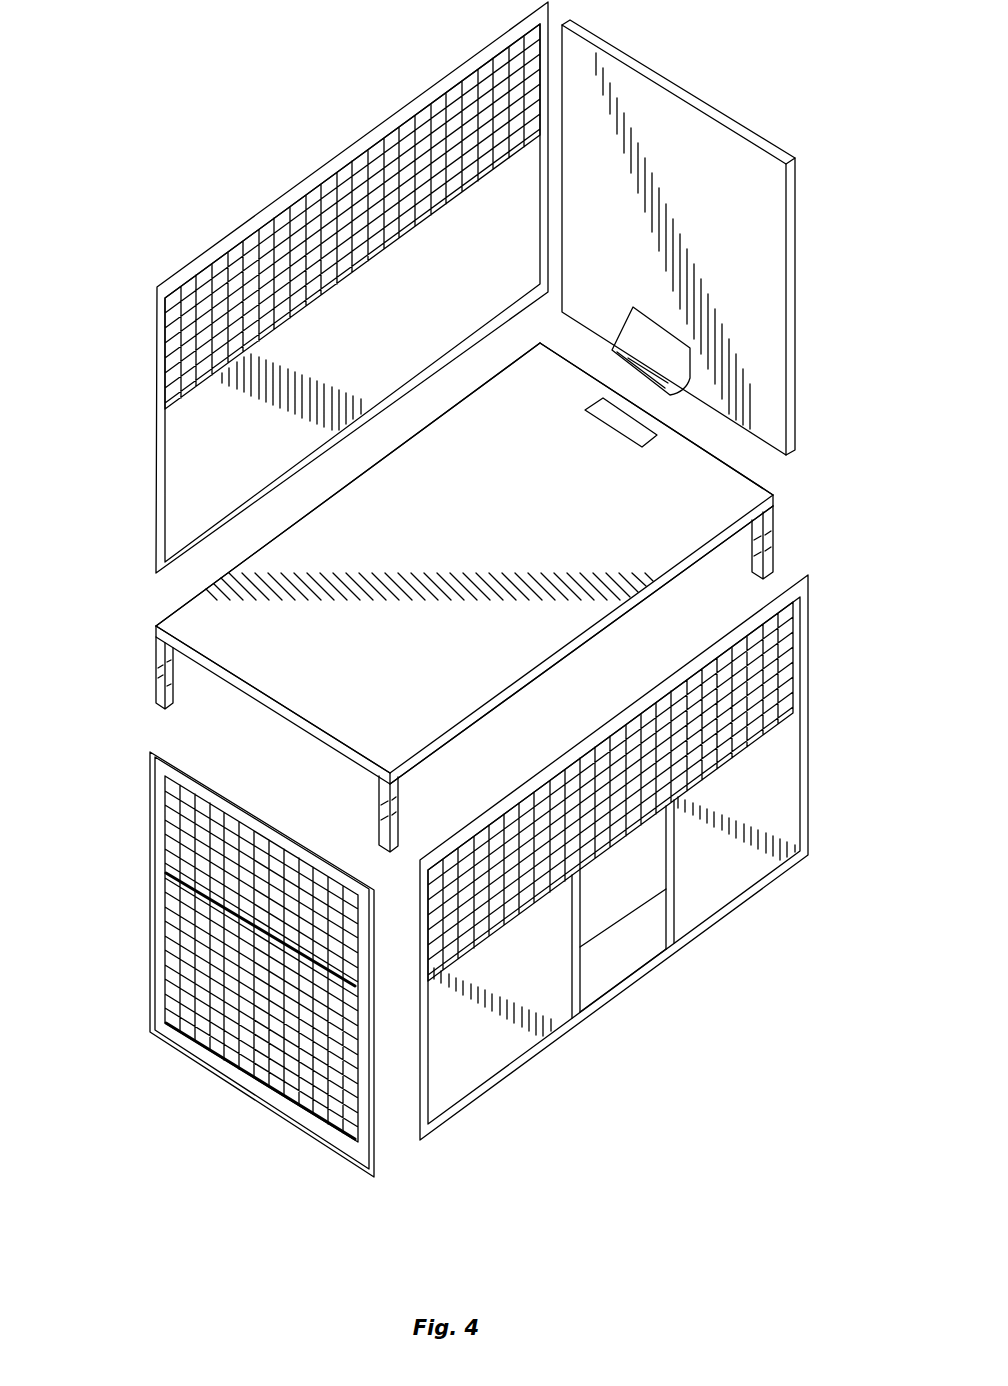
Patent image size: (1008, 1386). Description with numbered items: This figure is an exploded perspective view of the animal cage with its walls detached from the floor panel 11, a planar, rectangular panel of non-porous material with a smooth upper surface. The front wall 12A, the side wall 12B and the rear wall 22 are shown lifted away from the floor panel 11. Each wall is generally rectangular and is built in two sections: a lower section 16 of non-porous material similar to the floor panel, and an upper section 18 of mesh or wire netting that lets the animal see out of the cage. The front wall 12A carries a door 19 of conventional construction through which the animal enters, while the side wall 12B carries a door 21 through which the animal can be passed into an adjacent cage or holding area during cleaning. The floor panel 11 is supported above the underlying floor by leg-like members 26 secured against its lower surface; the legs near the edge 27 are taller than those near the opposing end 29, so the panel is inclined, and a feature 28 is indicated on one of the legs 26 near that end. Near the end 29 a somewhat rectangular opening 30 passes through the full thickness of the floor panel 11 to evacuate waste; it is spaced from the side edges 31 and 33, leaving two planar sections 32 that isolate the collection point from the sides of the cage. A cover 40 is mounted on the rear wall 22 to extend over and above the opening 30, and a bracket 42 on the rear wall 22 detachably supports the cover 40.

The floor panel 11 is at (383, 672).
The front wall 12A is at (163, 939).
The side wall 12B is at (747, 873).
The wall section 16 is at (190, 483).
The wall section 18 is at (223, 268).
The door 19 is at (321, 1056).
The door 21 is at (622, 954).
The rear wall 22 is at (732, 219).
The leg-like members 26 is at (175, 683).
The edge 27 is at (280, 703).
The leg notch 28 is at (775, 547).
The opposing end 29 is at (690, 443).
The opening 30 is at (613, 422).
The edge 31 is at (368, 469).
The planar sections 32 is at (524, 399).
The edge 33 is at (657, 591).
The cover 40 is at (633, 340).
The bracket 42 is at (663, 333).